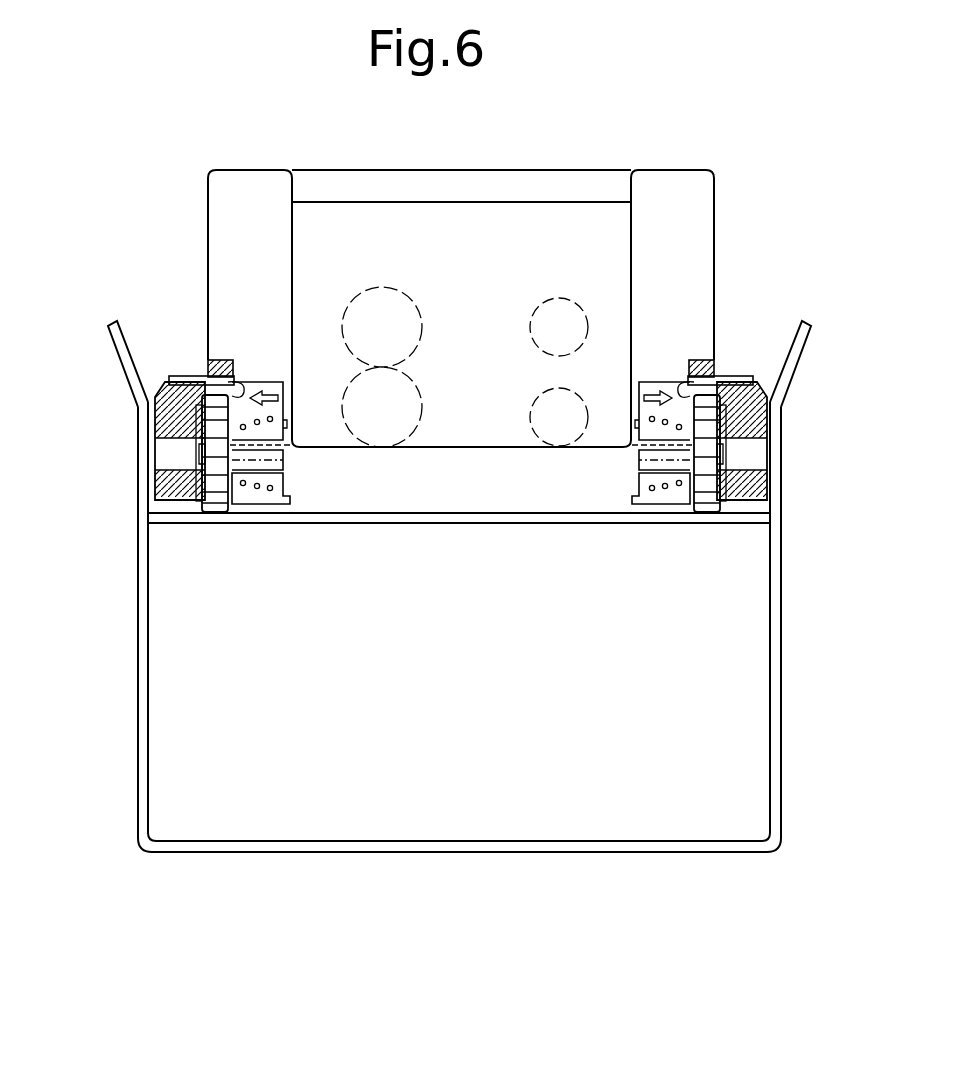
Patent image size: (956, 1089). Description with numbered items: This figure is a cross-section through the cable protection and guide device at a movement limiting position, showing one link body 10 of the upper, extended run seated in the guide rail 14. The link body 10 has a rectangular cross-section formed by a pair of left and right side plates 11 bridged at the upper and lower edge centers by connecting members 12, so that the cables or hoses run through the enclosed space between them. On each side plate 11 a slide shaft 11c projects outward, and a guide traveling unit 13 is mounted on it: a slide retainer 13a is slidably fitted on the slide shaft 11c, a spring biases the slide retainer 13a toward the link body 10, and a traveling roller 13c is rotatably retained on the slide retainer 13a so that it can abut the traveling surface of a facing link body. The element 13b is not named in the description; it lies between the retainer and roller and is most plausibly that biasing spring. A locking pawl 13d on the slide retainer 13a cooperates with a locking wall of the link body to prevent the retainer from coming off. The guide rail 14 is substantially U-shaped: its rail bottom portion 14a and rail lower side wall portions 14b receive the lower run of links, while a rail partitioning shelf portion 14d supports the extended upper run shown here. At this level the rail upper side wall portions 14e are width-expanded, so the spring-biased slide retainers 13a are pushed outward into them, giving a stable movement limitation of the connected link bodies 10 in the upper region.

The link body 10 is at (736, 214).
The side plate 11 is at (236, 251).
The slide shaft 11c is at (285, 463).
The connecting member 12 is at (475, 190).
The guide traveling unit 13 is at (60, 400).
The slide retainer 13a is at (243, 428).
The roller 13b is at (212, 500).
The traveling roller 13c is at (265, 456).
The locking pawl 13d is at (160, 407).
The guide rail 14 is at (652, 856).
The U-shaped rail bottom portion 14a is at (470, 854).
The rail lower side wall portion 14b is at (138, 733).
The rail partitioning shelf portion 14d is at (470, 524).
The rail upper side wall portion 14e is at (118, 363).